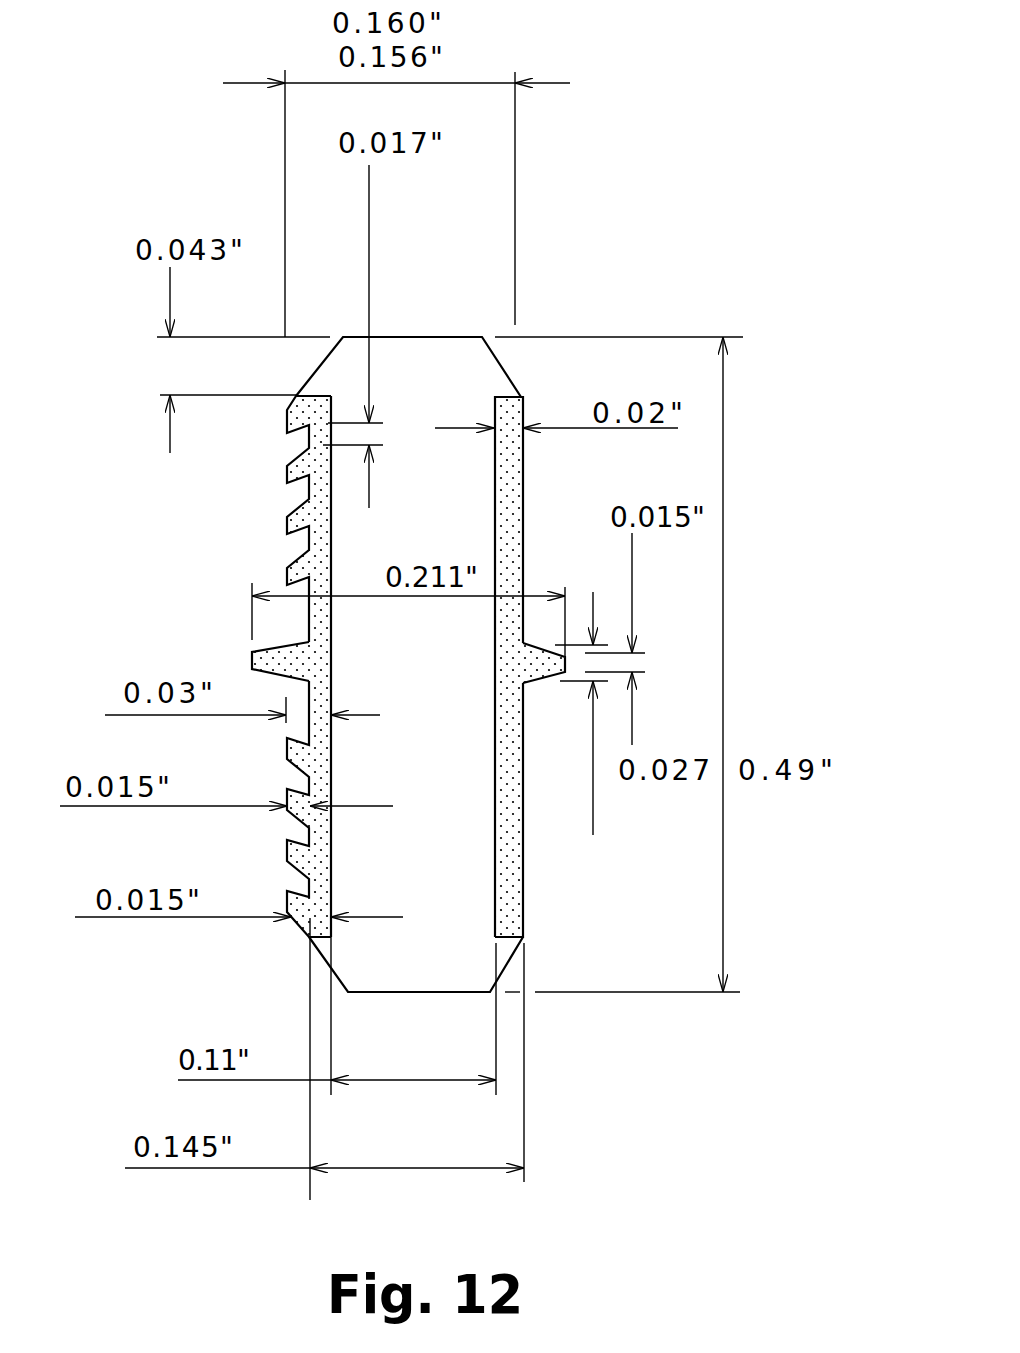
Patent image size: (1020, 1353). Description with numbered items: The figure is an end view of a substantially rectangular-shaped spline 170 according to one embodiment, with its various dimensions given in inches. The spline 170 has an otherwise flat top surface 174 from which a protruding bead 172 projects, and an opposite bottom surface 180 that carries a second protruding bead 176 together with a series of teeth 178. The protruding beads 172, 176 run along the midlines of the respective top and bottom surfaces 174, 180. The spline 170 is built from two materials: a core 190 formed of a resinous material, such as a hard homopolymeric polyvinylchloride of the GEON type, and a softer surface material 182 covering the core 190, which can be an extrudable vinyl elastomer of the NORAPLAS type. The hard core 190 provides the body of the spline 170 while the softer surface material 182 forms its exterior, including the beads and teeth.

The spline 170 is at (440, 800).
The protruding bead 172 is at (565, 672).
The flat top surface 174 is at (523, 495).
The protruding bead 176 is at (252, 658).
The teeth 178 is at (287, 753).
The bottom surface 180 is at (300, 628).
The surface material 182 is at (518, 887).
The core 190 is at (482, 337).